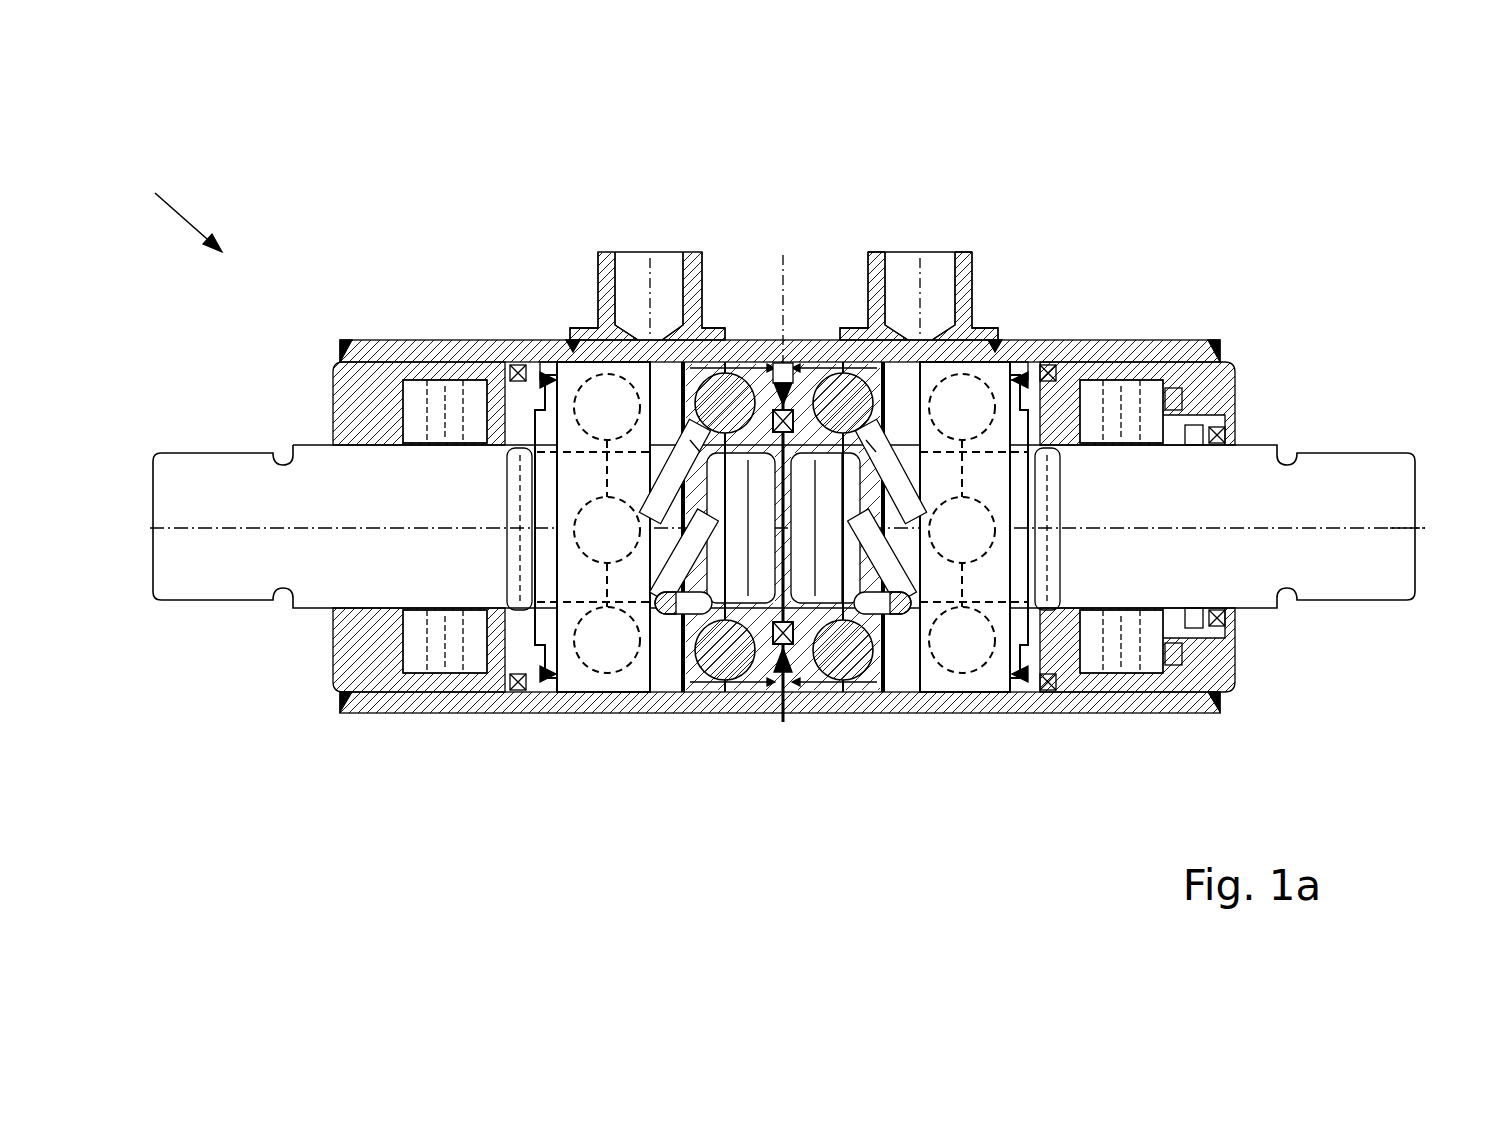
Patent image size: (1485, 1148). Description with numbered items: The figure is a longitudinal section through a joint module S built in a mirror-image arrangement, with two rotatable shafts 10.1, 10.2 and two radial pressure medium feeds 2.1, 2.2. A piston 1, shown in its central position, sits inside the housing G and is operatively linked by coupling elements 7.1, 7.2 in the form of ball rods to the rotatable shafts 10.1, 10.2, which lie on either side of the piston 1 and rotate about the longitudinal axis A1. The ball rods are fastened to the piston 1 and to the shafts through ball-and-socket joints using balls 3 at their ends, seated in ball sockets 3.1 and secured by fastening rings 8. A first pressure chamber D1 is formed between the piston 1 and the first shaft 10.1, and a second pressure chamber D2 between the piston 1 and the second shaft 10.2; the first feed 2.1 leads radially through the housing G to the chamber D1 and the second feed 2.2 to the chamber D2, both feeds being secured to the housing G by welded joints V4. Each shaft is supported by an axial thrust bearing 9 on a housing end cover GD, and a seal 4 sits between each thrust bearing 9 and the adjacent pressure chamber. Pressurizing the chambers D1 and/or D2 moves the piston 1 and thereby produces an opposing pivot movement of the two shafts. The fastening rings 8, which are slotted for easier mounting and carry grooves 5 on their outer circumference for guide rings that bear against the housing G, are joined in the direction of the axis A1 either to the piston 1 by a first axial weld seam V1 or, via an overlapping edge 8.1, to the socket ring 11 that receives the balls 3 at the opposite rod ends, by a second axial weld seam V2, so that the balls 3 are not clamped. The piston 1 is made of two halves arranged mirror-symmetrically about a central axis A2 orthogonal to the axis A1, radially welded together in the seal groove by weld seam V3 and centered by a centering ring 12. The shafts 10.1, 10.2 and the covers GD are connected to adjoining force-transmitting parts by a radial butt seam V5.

The piston 1 is at (788, 352).
The first pressure medium feed 2.1 is at (630, 283).
The second pressure medium feed 2.2 is at (935, 285).
The balls 3 is at (711, 375).
The ball sockets 3.1 is at (719, 378).
The seal 4 is at (512, 688).
The grooves 5 is at (700, 396).
The first coupling element 7.1 is at (690, 660).
The second coupling element 7.2 is at (925, 660).
The fastening rings 8 is at (598, 345).
The edge of fastening ring 8.1 is at (627, 375).
The axial thrust bearing 9 is at (470, 410).
The first rotatable shaft 10.1 is at (257, 572).
The second rotatable shaft 10.2 is at (1238, 560).
The socket ring 11 is at (568, 593).
The centering ring 12 is at (792, 655).
The longitudinal axis A1 is at (1412, 526).
The central axis A2 is at (785, 255).
The first pressure chamber D1 is at (670, 657).
The second pressure chamber D2 is at (902, 660).
The housing G is at (480, 712).
The housing end cover GD is at (342, 350).
The joint module S is at (177, 207).
The first axial weld seam V1 is at (772, 672).
The second axial weld seam V2 is at (556, 690).
The weld seam V3 is at (783, 722).
The welded joints V4 is at (572, 345).
The radial butt seam V5 is at (343, 703).